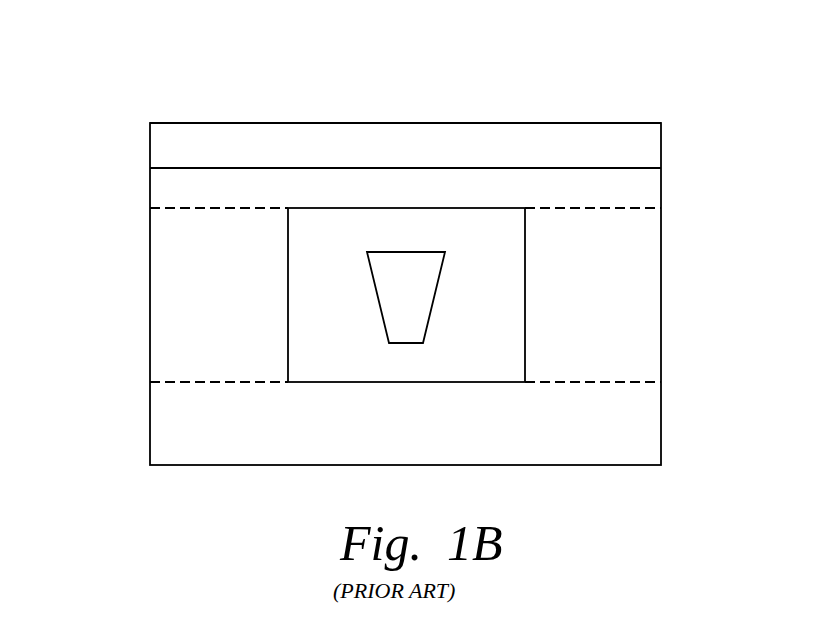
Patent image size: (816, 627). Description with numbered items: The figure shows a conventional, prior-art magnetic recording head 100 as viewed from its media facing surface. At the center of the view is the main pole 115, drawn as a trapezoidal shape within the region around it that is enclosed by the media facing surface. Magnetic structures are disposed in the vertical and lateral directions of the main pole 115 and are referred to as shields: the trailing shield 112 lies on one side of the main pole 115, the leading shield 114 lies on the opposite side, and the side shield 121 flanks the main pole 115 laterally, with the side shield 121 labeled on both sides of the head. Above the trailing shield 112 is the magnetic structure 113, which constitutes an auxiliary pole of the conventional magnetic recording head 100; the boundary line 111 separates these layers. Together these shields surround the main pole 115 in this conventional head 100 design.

The conventional magnetic recording head 100 is at (128, 53).
The top layer interface line 111 is at (637, 168).
The trailing shield 112 is at (157, 190).
The magnetic structure constituting an auxiliary pole 113 is at (157, 148).
The leading shield 114 is at (157, 423).
The main pole 115 is at (386, 290).
The side shield 121 is at (157, 290).